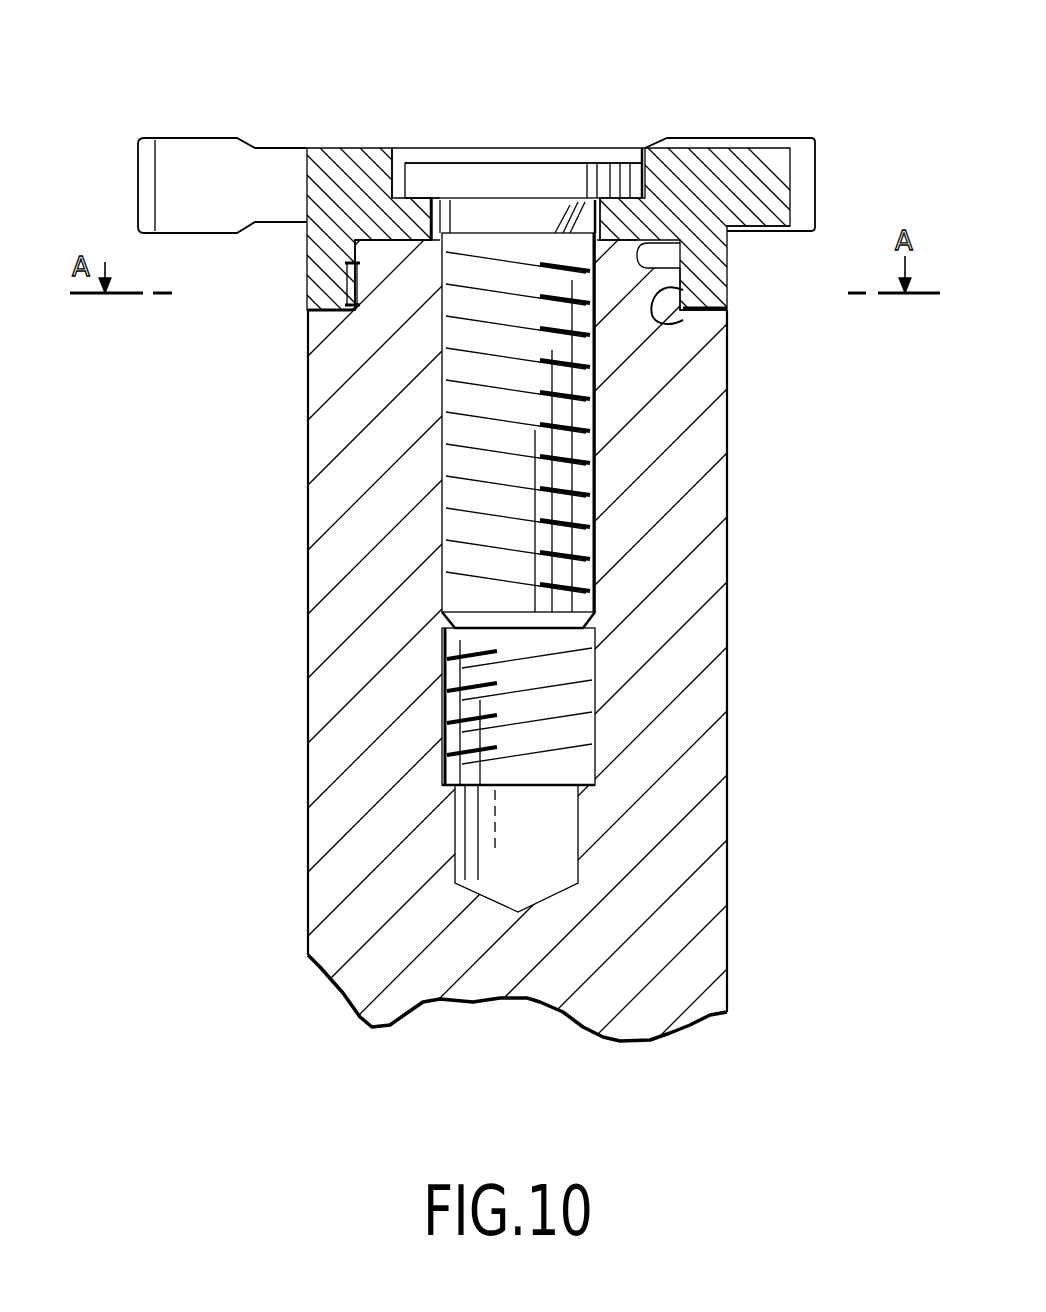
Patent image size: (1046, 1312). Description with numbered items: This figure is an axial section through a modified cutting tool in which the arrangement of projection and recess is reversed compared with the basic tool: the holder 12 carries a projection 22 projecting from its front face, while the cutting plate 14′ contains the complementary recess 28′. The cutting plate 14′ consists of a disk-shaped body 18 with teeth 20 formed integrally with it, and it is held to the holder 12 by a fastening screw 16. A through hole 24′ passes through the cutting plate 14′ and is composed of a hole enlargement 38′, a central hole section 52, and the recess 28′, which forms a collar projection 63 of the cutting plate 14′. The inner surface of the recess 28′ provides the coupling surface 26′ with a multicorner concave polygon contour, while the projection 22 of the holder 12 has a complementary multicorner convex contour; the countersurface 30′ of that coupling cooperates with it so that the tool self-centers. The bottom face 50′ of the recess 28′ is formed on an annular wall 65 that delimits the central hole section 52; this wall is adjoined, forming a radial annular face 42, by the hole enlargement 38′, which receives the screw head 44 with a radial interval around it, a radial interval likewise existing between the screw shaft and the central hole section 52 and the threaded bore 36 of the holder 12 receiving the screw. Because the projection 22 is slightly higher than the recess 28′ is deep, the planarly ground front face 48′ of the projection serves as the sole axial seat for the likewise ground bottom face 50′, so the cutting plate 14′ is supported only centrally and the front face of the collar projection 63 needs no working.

The holder 12 is at (720, 488).
The cutting plate 14′ is at (706, 160).
The fastening screw 16 is at (563, 245).
The disk-shaped body 18 is at (325, 150).
The teeth 20 is at (178, 160).
The projection 22 is at (352, 305).
The through hole 24′ is at (432, 200).
The coupling surface 26′ is at (352, 272).
The recess 28′ is at (680, 322).
The leg bottom surface 30′ is at (700, 290).
The threaded bore 36 is at (447, 470).
The hole enlargement 38′ is at (400, 150).
The radial annular face 42 is at (438, 200).
The screw head 44 is at (538, 150).
The front face of projection 48′ is at (750, 224).
The bottom face of recess 50′ is at (688, 262).
The central hole section 52 is at (603, 245).
The collar projection 63 is at (335, 238).
The annular wall 65 is at (400, 245).